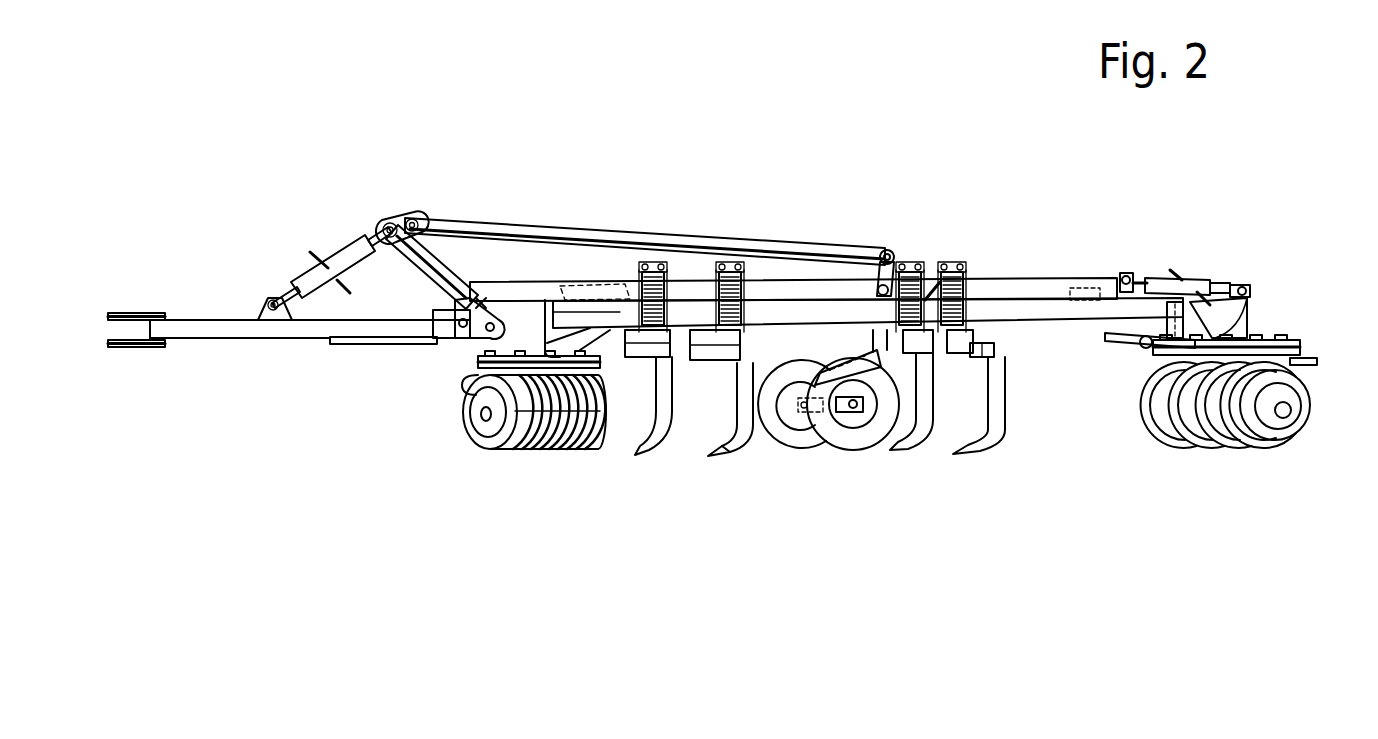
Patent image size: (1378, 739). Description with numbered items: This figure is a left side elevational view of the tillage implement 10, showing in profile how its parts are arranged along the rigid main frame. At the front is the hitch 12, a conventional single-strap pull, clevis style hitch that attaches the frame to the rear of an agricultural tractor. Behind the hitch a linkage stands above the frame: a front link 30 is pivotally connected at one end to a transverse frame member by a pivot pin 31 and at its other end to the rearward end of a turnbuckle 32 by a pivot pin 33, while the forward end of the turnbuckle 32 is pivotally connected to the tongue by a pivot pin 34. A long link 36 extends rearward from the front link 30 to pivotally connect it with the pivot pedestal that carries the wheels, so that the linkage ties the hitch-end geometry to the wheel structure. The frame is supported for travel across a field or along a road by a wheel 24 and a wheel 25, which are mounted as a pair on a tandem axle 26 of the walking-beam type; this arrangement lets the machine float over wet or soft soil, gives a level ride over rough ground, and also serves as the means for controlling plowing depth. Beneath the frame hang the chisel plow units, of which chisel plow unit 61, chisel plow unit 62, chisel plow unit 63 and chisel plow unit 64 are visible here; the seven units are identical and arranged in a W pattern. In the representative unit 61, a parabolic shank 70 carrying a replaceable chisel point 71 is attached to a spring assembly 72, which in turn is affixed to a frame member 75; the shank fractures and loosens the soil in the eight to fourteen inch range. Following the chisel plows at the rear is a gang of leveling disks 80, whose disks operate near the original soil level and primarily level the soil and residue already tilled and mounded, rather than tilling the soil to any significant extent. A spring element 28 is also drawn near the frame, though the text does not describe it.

The tillage implement 10 is at (727, 112).
The hitch 12 is at (128, 312).
The wheel 24 is at (857, 436).
The wheel 25 is at (794, 440).
The tandem axle 26 is at (840, 438).
The spring 28 is at (896, 250).
The front link 30 is at (440, 288).
The pivot pin 31 is at (470, 338).
The turnbuckle 32 is at (346, 248).
The pivot pin 33 is at (386, 222).
The pivot pin 34 is at (271, 300).
The long link 36 is at (514, 226).
The chisel plow unit 61 is at (762, 268).
The chisel plow unit 62 is at (1012, 352).
The chisel plow unit 63 is at (948, 376).
The chisel plow unit 64 is at (648, 388).
The parabolic shank 70 is at (745, 405).
The chisel point 71 is at (713, 454).
The spring assembly 72 is at (702, 283).
The frame member 75 is at (705, 285).
The gang of leveling disks 80 is at (1293, 322).